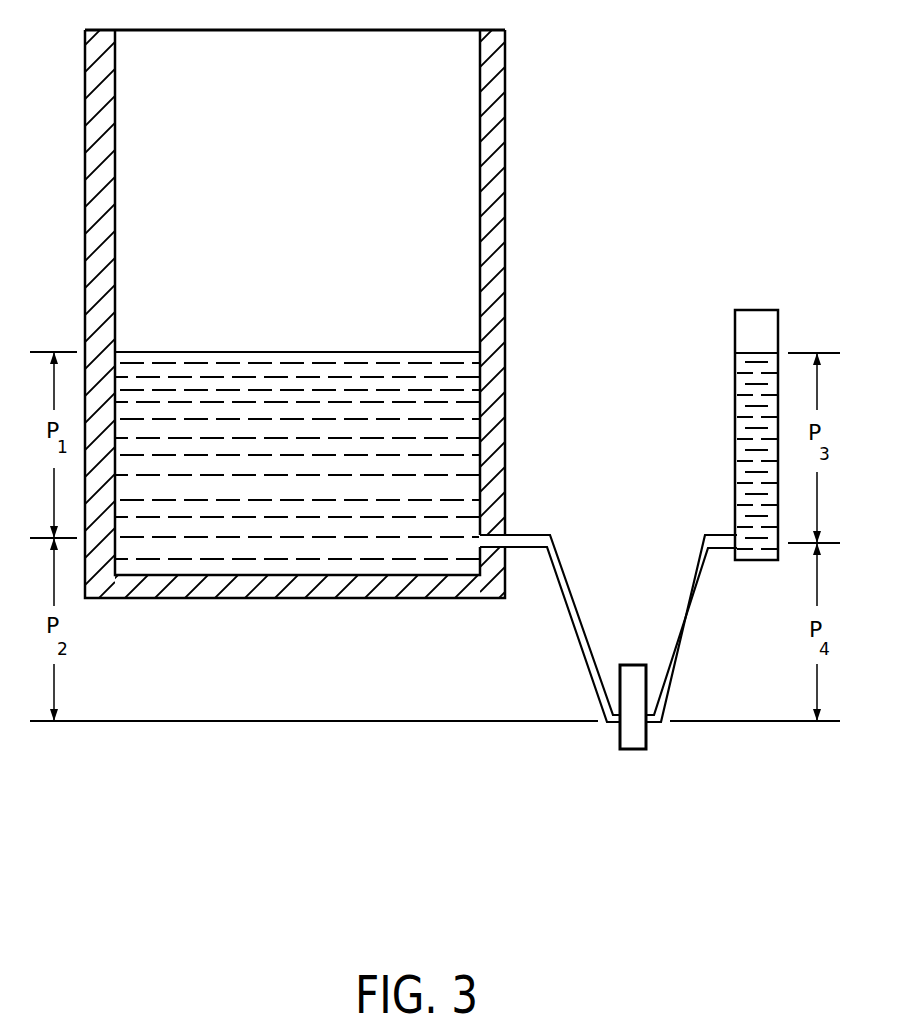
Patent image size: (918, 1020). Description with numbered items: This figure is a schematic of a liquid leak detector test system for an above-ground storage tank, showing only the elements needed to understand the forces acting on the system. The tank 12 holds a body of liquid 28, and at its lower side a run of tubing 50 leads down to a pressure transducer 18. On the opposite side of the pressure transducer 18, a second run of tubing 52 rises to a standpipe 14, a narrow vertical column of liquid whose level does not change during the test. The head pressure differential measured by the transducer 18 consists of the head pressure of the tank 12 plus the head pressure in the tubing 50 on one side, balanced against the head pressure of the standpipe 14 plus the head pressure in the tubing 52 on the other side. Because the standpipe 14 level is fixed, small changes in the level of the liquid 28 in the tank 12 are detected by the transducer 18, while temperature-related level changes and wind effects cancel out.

The tank 12 is at (85, 163).
The liquid 28 is at (327, 352).
The standpipe 14 is at (735, 393).
The tubing 50 is at (587, 665).
The pressure transducer 18 is at (627, 663).
The tubing 52 is at (680, 653).